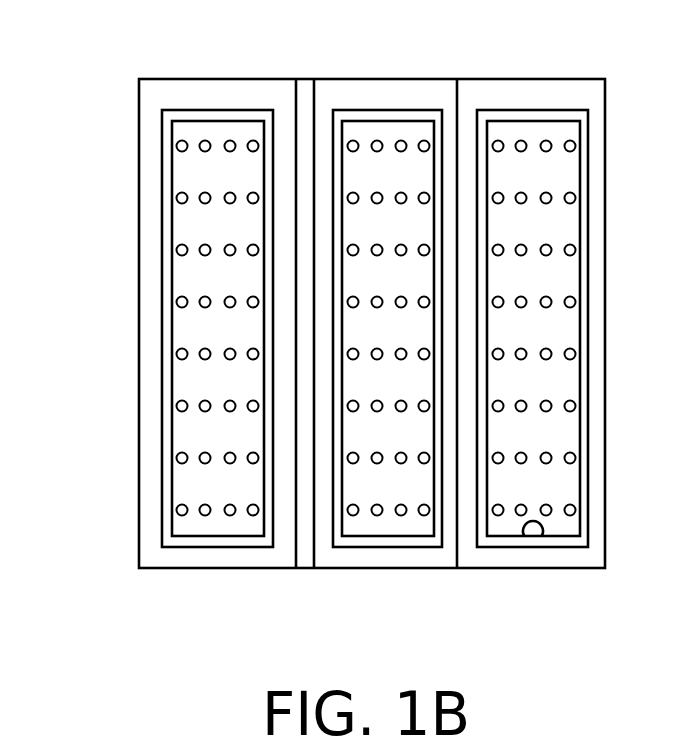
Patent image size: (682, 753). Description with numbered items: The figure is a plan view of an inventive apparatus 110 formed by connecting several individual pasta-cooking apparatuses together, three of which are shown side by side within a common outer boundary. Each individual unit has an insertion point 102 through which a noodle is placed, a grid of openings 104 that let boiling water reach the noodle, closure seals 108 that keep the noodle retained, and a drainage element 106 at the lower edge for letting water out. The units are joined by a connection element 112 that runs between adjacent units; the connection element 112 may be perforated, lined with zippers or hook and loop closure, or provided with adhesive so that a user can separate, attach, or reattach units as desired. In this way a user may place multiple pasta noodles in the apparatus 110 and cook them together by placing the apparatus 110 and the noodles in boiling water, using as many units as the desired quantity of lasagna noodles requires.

The insertion point 102 is at (218, 117).
The openings 104 is at (427, 513).
The drainage element 106 is at (533, 532).
The closure seals 108 is at (313, 303).
The inventive apparatus 110 is at (333, 36).
The connection element 112 is at (293, 186).